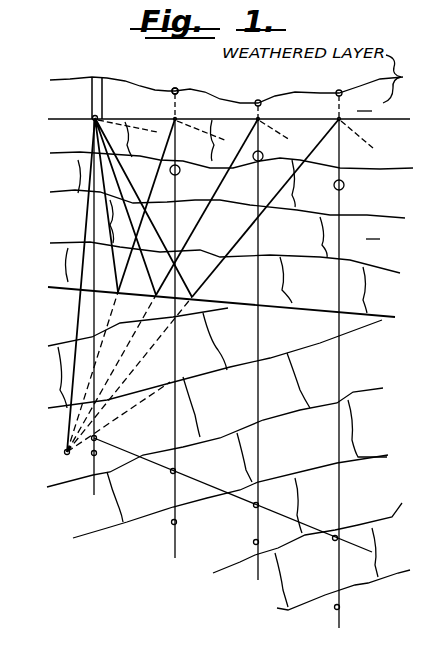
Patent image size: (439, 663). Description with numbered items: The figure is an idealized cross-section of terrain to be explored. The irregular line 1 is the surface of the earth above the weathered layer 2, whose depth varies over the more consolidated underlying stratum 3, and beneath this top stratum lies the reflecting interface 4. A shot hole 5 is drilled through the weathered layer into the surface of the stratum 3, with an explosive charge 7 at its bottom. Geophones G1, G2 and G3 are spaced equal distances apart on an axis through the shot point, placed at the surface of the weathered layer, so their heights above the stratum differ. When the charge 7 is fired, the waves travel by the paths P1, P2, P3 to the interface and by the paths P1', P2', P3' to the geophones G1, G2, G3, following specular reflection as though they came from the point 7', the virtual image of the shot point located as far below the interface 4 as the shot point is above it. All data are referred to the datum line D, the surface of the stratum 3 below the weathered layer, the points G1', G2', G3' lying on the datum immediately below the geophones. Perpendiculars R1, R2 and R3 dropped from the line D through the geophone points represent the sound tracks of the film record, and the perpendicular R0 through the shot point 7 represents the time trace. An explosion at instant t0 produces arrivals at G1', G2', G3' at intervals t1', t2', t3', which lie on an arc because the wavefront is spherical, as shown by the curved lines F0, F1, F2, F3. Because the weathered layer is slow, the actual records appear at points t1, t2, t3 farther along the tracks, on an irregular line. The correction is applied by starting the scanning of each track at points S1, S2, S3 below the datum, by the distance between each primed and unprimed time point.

The surface of the earth 1 is at (173, 88).
The weathered layer 2 is at (226, 94).
The consolidated underlying stratum 3 is at (231, 216).
The reflecting interface 4 is at (378, 313).
The shot hole 5 is at (98, 77).
The explosive charge 7 is at (129, 274).
The virtual image of the shot point 7' is at (116, 378).
The datum line D is at (396, 119).
The geophone G1 is at (191, 82).
The geophone G2 is at (274, 91).
The geophone G3 is at (350, 84).
The point on datum line below geophone G1 G1' is at (189, 111).
The point on datum line below geophone G2 G2' is at (278, 112).
The point on datum line below geophone G3 G3' is at (350, 143).
The wavefront line F0 is at (157, 128).
The wavefront line F1 is at (220, 134).
The wavefront line F2 is at (293, 144).
The wavefront line F3 is at (373, 148).
The wave path P1 is at (137, 218).
The wave path P2 is at (197, 219).
The wave path P3 is at (262, 208).
The wave path P1' is at (180, 147).
The wave path P2' is at (262, 143).
The wave path P3' is at (307, 179).
The scanning start point S1 is at (179, 174).
The scanning start point S2 is at (259, 161).
The scanning start point S3 is at (344, 185).
The perpendicular representing time trace R0 is at (96, 418).
The perpendicular representing record track R1 is at (177, 350).
The perpendicular representing record track R2 is at (259, 331).
The perpendicular representing record track R3 is at (340, 355).
The instant of explosion t0 is at (97, 455).
The actual record point t1 is at (186, 522).
The actual record point t2 is at (265, 542).
The actual record point t3 is at (350, 607).
The datum arrival time point t1' is at (187, 464).
The datum arrival time point t2' is at (268, 498).
The datum arrival time point t3' is at (345, 553).